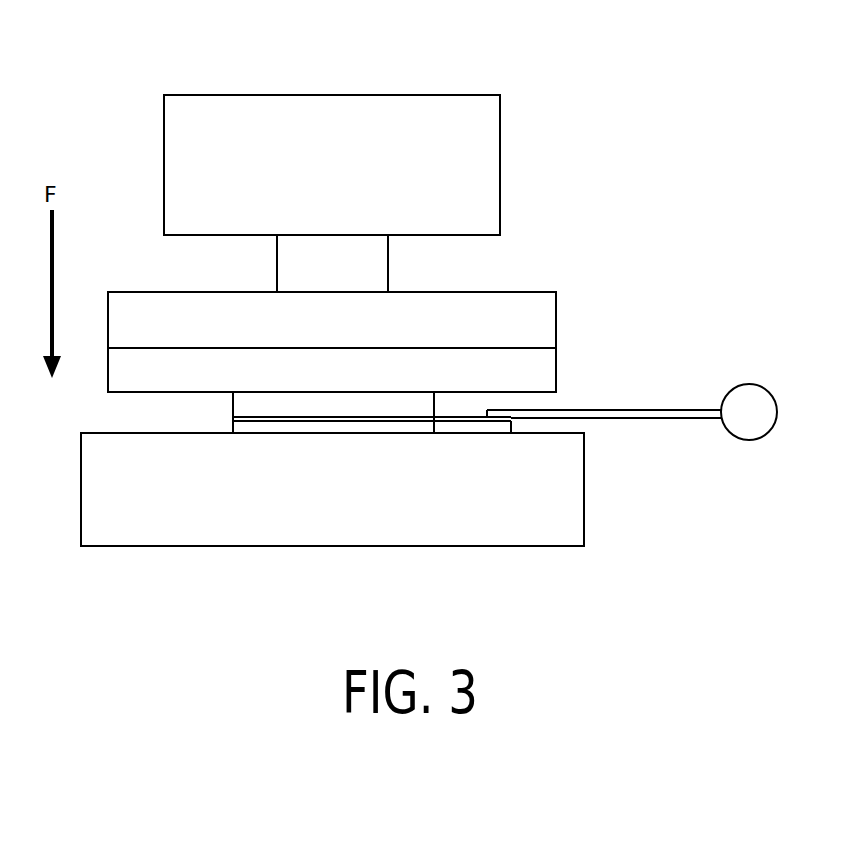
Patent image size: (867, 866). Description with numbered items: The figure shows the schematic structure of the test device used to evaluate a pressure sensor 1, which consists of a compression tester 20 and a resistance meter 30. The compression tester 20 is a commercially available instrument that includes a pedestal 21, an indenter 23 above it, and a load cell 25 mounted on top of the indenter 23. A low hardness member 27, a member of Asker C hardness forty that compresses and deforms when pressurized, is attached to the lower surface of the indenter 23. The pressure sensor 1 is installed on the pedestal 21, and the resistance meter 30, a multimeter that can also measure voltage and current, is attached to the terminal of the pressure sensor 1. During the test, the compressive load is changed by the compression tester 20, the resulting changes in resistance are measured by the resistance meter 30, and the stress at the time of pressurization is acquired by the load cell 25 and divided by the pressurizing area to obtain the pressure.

The sample (conductive member under test) 1 is at (226, 413).
The compression tester 20 is at (506, 66).
The pedestal 21 is at (306, 547).
The indenter 23 is at (529, 292).
The load cell 25 is at (192, 99).
The low hardness member 27 is at (556, 372).
The resistance meter 30 is at (740, 371).